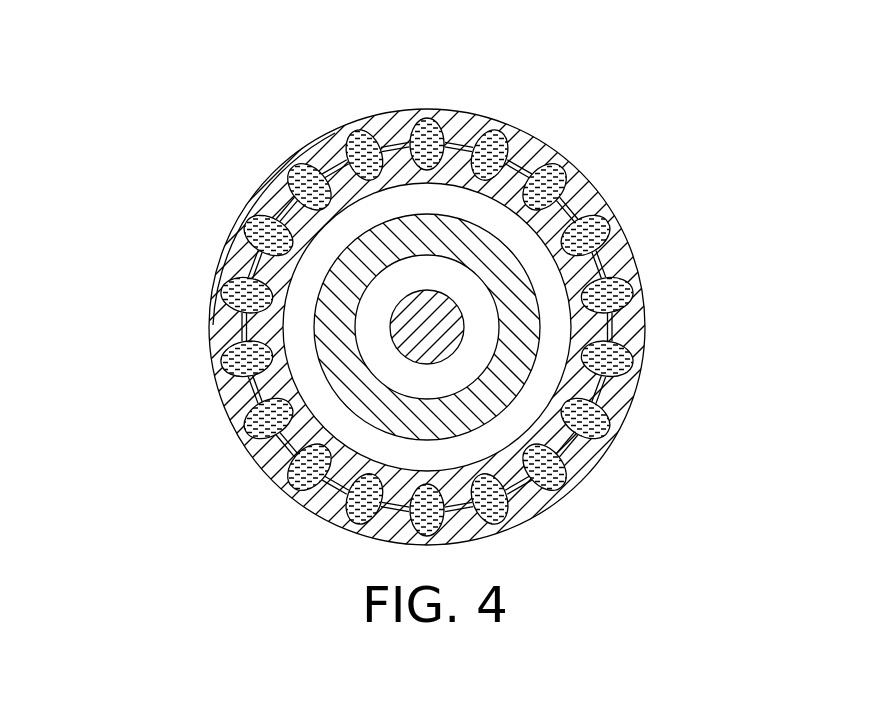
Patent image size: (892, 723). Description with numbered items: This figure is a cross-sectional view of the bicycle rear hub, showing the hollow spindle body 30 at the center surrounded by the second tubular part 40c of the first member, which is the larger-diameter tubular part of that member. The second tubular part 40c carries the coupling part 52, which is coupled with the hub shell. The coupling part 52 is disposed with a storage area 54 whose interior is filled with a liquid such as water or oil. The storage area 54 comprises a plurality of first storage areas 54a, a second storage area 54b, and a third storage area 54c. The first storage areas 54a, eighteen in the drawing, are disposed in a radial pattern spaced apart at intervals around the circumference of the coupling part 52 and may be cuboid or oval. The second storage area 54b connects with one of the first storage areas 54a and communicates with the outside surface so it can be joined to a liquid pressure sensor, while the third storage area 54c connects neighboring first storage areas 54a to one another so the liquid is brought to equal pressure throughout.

The spindle body 30 is at (312, 279).
The second tubular part 40c is at (209, 313).
The coupling part 52 is at (255, 164).
The storage area 54 is at (472, 278).
The first storage areas 54a is at (521, 166).
The second storage area 54b is at (437, 118).
The third storage area 54c is at (388, 128).